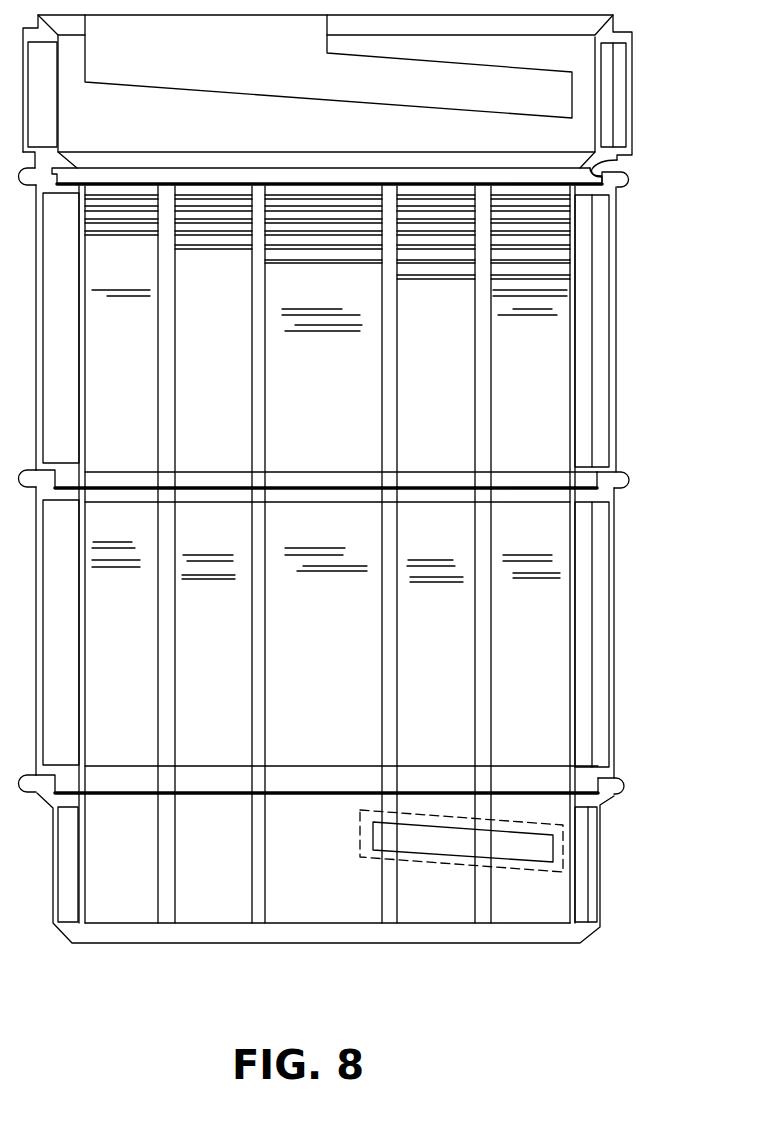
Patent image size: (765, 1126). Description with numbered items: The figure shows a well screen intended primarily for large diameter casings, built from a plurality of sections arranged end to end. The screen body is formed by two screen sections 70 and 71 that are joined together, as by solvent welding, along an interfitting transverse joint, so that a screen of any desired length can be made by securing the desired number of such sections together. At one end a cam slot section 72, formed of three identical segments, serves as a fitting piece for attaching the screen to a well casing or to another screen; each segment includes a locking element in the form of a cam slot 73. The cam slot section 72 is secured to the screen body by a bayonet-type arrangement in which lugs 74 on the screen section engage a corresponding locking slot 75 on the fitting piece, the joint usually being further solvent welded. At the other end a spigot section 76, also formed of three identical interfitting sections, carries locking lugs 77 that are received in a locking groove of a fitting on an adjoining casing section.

The screen section 70 is at (617, 322).
The screen section 71 is at (617, 606).
The cam slot section 72 is at (636, 65).
The cam slot 73 is at (408, 92).
The lugs 74 is at (632, 177).
The locking slot 75 is at (632, 161).
The spigot section 76 is at (603, 874).
The locking lugs 77 is at (522, 845).